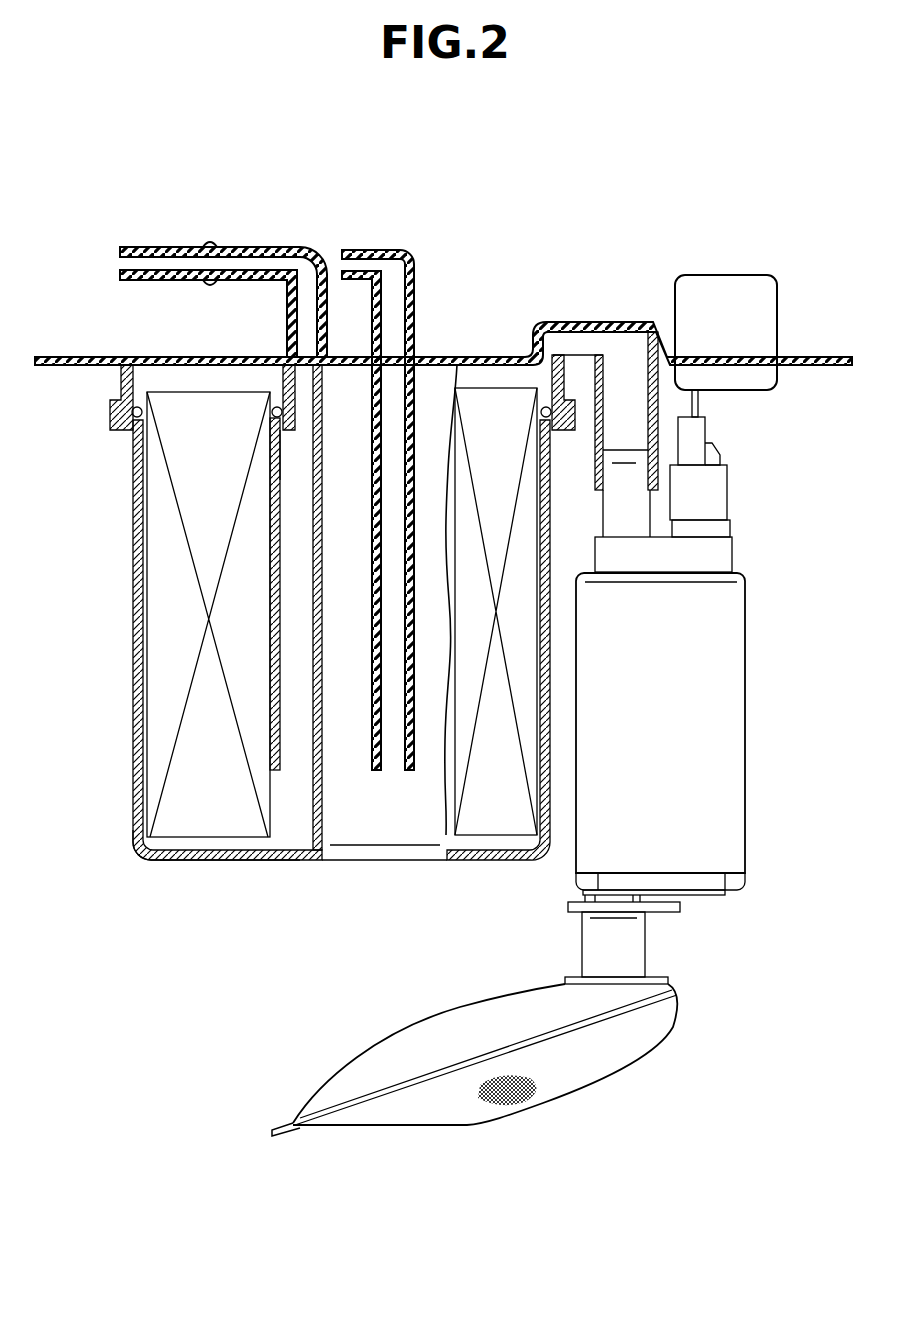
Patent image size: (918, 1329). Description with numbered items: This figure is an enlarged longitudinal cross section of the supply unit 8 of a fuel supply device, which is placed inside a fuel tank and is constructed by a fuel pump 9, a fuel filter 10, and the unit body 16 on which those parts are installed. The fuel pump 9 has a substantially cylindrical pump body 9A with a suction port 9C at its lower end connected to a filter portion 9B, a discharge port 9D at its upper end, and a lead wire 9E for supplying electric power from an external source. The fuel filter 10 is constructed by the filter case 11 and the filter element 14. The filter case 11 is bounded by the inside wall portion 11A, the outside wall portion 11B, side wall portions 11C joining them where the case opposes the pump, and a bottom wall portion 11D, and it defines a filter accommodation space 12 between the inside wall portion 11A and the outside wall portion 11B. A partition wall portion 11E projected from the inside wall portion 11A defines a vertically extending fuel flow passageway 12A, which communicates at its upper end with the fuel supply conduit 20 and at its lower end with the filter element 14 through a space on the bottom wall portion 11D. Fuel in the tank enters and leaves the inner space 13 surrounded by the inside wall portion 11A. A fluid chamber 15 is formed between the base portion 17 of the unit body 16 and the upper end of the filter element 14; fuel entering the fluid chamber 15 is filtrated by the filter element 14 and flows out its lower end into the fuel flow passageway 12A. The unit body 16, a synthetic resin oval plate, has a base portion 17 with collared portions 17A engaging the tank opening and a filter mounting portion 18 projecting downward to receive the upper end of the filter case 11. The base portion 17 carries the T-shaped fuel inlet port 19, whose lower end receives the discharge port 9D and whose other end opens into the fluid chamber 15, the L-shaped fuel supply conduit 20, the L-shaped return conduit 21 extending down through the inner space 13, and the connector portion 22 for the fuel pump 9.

The supply unit 8 is at (562, 233).
The fuel pump 9 is at (545, 763).
The pump body 9A is at (715, 742).
The filter portion 9B is at (637, 1043).
The suction port 9C is at (637, 948).
The discharge port 9D is at (640, 509).
The lead wire 9E is at (700, 403).
The fuel filter 10 is at (190, 866).
The filter case 11 is at (289, 661).
The inside wall portion 11A is at (323, 745).
The outside wall portion 11B is at (135, 553).
The side wall portion 11C is at (537, 772).
The bottom wall portion 11D is at (235, 868).
The partition wall portion 11E is at (270, 740).
The filter accommodation space 12 is at (150, 858).
The fuel flow passageway 12A is at (295, 467).
The inner space 13 is at (418, 797).
The filter element 14 is at (165, 612).
The fluid chamber 15 is at (497, 378).
The unit body 16 is at (458, 362).
The base portion 17 is at (229, 357).
The collared portion 17A is at (822, 357).
The filter mounting portion 18 is at (113, 388).
The fuel inlet port 19 is at (608, 375).
The fuel supply conduit 20 is at (166, 248).
The return conduit 21 is at (363, 262).
The connector portion 22 is at (726, 285).